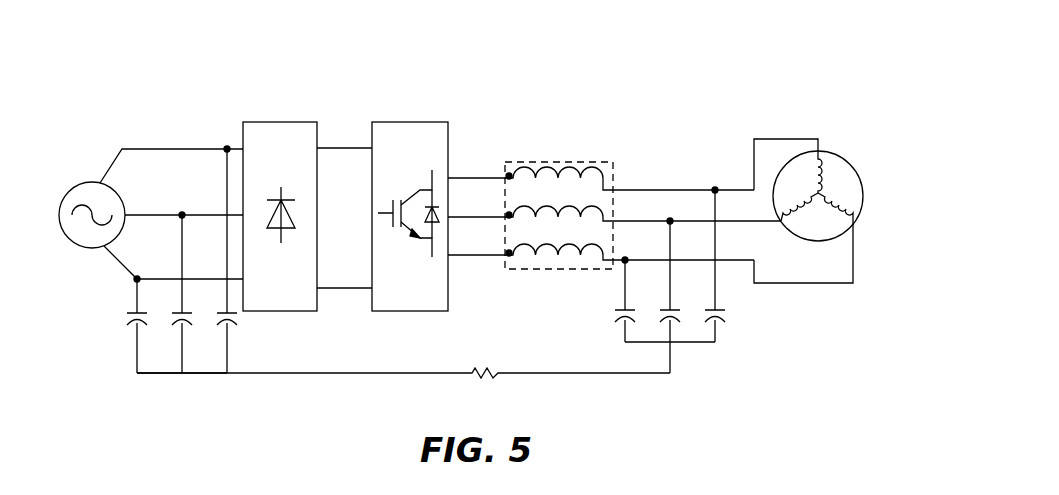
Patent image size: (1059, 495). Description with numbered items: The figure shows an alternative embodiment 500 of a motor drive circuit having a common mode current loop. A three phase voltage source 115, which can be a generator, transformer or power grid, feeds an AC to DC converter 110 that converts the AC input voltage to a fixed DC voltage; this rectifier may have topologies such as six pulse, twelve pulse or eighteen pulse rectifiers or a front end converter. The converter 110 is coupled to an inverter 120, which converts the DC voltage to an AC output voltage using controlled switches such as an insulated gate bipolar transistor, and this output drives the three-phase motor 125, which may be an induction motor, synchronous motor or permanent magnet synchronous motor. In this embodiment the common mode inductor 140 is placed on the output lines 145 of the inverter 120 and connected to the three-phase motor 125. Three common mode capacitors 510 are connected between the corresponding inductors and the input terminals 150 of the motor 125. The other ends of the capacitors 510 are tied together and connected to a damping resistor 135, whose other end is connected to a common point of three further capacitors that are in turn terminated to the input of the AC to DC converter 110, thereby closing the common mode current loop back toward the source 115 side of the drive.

The embodiment 500 is at (797, 53).
The three phase voltage source 115 is at (89, 183).
The AC to DC converter 110 is at (283, 121).
The inverter 120 is at (413, 121).
The inverter output lines 145 is at (450, 178).
The common mode inductor 140 is at (565, 160).
The three-phase motor 125 is at (851, 171).
The input terminals 150 is at (818, 151).
The capacitors 510 is at (742, 318).
The damping resistor 135 is at (495, 378).